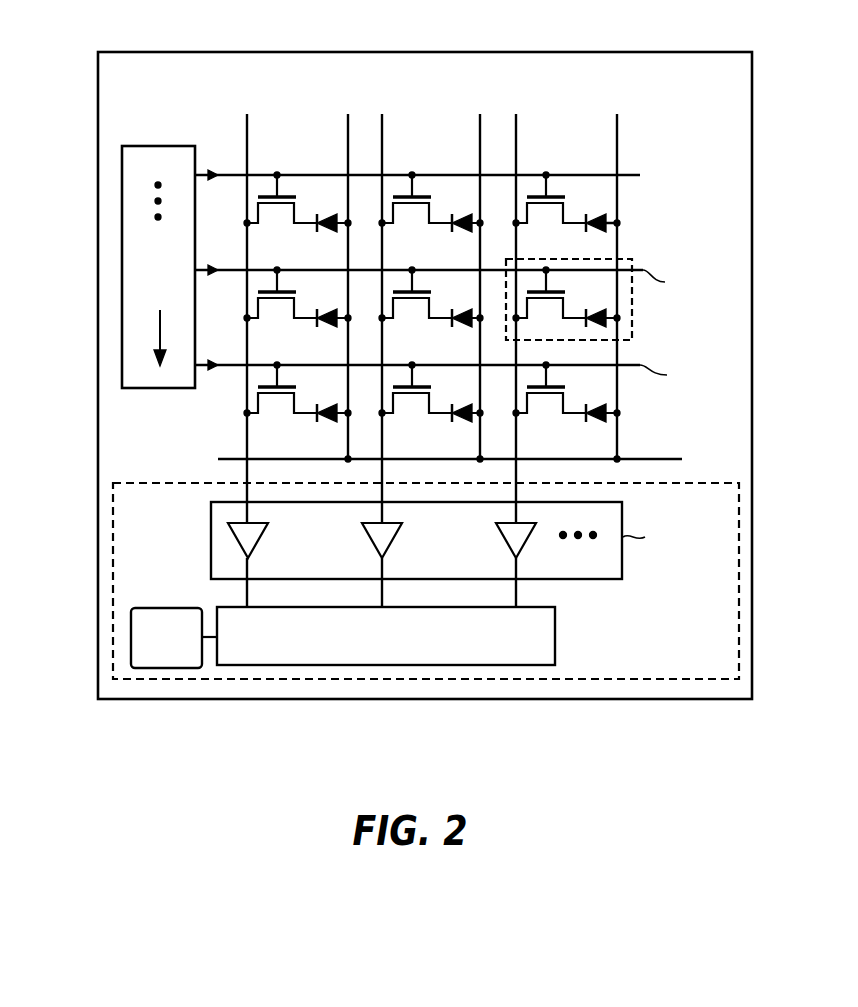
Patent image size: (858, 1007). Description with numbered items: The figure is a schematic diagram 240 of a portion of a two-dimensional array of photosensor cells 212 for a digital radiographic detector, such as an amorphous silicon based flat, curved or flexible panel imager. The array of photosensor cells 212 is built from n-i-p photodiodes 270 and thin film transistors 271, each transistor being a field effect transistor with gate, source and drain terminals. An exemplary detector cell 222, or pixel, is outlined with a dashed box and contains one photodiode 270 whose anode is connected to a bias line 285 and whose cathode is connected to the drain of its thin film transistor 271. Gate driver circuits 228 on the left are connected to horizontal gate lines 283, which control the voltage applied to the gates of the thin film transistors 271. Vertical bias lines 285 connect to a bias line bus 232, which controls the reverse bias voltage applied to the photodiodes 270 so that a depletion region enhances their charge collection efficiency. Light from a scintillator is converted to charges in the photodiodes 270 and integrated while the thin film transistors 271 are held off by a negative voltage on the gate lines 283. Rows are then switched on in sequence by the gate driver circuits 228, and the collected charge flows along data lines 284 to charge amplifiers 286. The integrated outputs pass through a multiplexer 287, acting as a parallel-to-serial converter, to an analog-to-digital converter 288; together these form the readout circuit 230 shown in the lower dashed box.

The schematic diagram 240 is at (819, 46).
The array of photosensor cells 212 is at (647, 107).
The detector cell 222 is at (634, 305).
The gate driver circuits 228 is at (137, 146).
The readout circuits 230 is at (739, 652).
The bias line bus 232 is at (485, 446).
The photodiode 270 is at (624, 216).
The thin film transistor 271 is at (542, 167).
The gate line 283 is at (640, 175).
The data line 284 is at (382, 150).
The bias line 285 is at (347, 163).
The charge amplifiers 286 is at (474, 540).
The multiplexer 287 is at (556, 632).
The analog-to-digital converter 288 is at (153, 607).